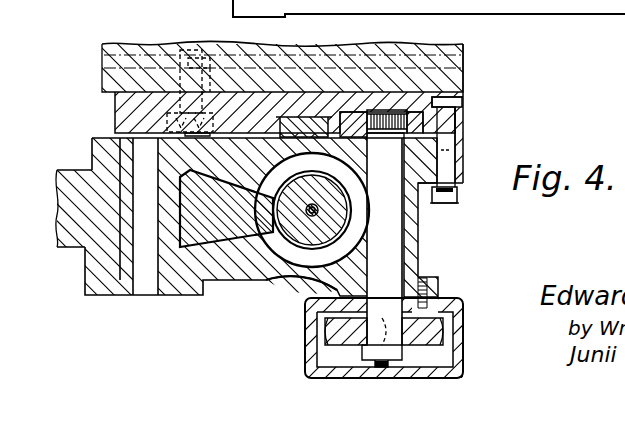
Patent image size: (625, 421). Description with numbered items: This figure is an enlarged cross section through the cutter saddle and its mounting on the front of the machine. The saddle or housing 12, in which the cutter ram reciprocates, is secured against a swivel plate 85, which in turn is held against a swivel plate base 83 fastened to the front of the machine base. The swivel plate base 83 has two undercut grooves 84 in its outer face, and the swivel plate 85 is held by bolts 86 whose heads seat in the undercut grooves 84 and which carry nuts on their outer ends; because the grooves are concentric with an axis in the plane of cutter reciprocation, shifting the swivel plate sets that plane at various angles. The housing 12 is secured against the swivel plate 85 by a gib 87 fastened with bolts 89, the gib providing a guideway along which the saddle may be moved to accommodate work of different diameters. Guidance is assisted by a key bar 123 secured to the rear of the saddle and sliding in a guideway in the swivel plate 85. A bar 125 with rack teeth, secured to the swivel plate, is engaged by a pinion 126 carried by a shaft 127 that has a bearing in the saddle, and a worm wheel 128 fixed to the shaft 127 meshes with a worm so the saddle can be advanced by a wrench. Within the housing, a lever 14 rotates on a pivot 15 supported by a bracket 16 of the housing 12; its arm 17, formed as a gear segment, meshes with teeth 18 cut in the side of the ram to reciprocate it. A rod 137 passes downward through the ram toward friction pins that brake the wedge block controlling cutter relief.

The saddle or housing 12 is at (293, 287).
The lever 14 is at (76, 172).
The pivot 15 is at (143, 280).
The bracket 16 is at (223, 268).
The arm 17 is at (244, 226).
The teeth 18 is at (352, 208).
The swivel plate base 83 is at (181, 54).
The undercut grooves 84 is at (127, 57).
The swivel plate 85 is at (113, 100).
The bolts 86 is at (207, 58).
The gib 87 is at (465, 177).
The bolts 89 is at (447, 162).
The key bar 123 is at (300, 120).
The bar 125 is at (357, 118).
The pinion 126 is at (407, 124).
The shaft 127 is at (392, 265).
The worm wheel 128 is at (443, 332).
The rod 137 is at (313, 205).